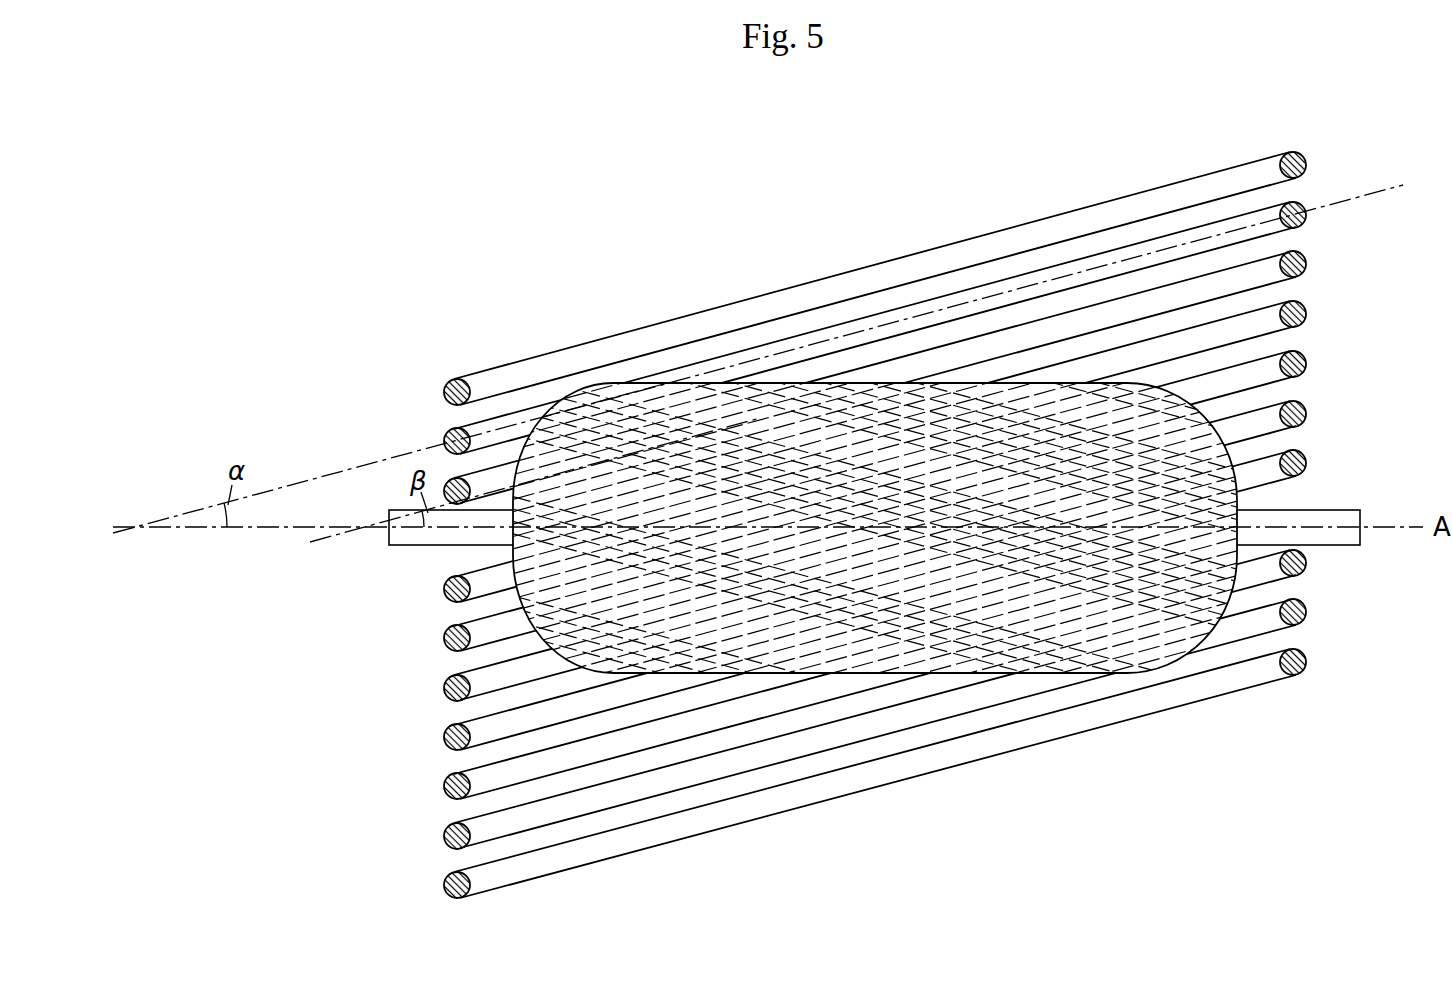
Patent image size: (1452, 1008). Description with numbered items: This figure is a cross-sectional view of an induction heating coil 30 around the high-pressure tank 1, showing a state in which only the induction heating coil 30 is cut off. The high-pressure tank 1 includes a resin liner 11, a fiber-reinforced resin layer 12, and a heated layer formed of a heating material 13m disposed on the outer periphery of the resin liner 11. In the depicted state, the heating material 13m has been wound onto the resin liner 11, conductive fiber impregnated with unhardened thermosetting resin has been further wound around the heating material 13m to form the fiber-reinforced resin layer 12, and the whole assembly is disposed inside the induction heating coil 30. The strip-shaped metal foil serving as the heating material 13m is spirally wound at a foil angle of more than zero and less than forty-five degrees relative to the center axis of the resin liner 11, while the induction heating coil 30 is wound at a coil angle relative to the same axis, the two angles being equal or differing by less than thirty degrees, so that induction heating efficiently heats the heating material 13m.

The induction heating coil 30 is at (1343, 162).
The high-pressure tank 1 is at (875, 516).
The resin liner 11 is at (887, 417).
The fiber-reinforced resin layer 12 is at (855, 381).
The heating material 13m is at (720, 418).